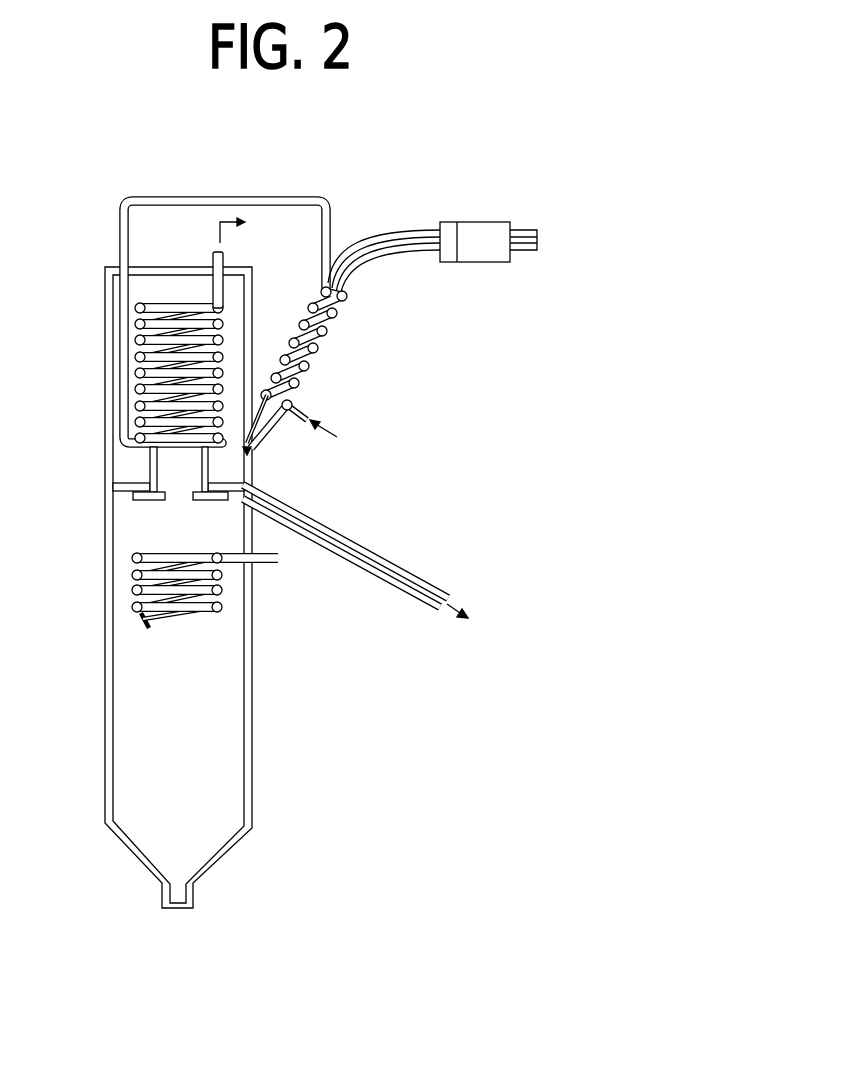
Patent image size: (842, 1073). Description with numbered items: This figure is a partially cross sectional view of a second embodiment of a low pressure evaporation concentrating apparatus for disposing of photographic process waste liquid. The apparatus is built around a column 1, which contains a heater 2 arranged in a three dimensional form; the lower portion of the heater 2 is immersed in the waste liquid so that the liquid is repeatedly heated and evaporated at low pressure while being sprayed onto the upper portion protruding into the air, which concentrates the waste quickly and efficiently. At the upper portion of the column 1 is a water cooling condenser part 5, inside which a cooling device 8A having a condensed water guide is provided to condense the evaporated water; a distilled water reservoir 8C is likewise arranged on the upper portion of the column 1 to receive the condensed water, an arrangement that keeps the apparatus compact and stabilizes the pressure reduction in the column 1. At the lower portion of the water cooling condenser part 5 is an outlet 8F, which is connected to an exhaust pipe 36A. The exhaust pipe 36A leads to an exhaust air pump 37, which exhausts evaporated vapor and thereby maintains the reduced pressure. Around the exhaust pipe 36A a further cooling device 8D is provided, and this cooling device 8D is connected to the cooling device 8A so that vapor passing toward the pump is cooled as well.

The column 1 is at (105, 608).
The heater 2 is at (222, 607).
The water cooling condenser part 5 is at (228, 268).
The cooling device 8A is at (223, 304).
The distilled water reservoir 8C is at (250, 484).
The cooling device 8D is at (324, 338).
The outlet 8F is at (253, 452).
The exhaust pipe 36A is at (360, 250).
The exhaust air pump (P-3) 37 is at (480, 222).